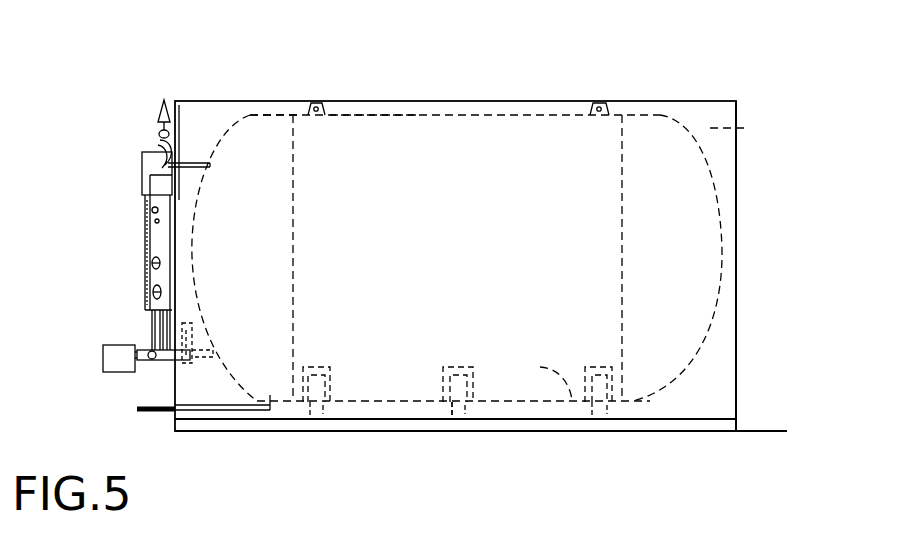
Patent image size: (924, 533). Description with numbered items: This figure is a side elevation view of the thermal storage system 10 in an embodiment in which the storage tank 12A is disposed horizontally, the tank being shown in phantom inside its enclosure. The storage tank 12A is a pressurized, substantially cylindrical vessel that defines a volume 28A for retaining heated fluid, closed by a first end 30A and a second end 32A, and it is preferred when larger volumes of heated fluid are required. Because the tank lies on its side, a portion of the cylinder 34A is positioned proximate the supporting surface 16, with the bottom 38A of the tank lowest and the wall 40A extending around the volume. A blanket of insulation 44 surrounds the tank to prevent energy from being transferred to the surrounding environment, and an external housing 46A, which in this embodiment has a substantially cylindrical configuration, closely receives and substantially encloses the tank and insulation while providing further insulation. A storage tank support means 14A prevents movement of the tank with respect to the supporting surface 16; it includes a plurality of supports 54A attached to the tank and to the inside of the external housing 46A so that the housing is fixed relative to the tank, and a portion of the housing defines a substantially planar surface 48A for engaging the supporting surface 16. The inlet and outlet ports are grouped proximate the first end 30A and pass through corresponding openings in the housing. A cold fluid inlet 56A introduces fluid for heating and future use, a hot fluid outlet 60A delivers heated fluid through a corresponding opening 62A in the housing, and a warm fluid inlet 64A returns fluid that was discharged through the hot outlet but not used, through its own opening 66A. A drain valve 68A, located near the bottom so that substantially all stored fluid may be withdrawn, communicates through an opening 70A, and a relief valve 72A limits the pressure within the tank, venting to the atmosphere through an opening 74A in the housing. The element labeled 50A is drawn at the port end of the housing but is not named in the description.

The thermal storage system 10 is at (87, 82).
The storage tank 12A is at (560, 114).
The storage tank support means 14A is at (450, 407).
The supporting surface 16 is at (765, 431).
The volume 28A is at (452, 163).
The first end 30A is at (247, 115).
The second end 32A is at (720, 224).
The portion of the cylinder 34A is at (375, 115).
The bottom 38A is at (368, 378).
The wall 40A is at (573, 412).
The insulation 44 is at (747, 127).
The external housing 46A is at (736, 153).
The planar surface 48A is at (663, 433).
The bracket block 50A is at (147, 168).
The supports 54A is at (310, 407).
The cold fluid inlet 56A is at (268, 403).
The hot fluid outlet 60A is at (210, 165).
The opening 62A is at (167, 153).
The warm fluid inlet 64A is at (213, 352).
The opening 66A is at (176, 362).
The drain valve 68A is at (140, 412).
The opening 70A is at (177, 408).
The relief valve 72A is at (163, 100).
The opening 74A is at (180, 147).